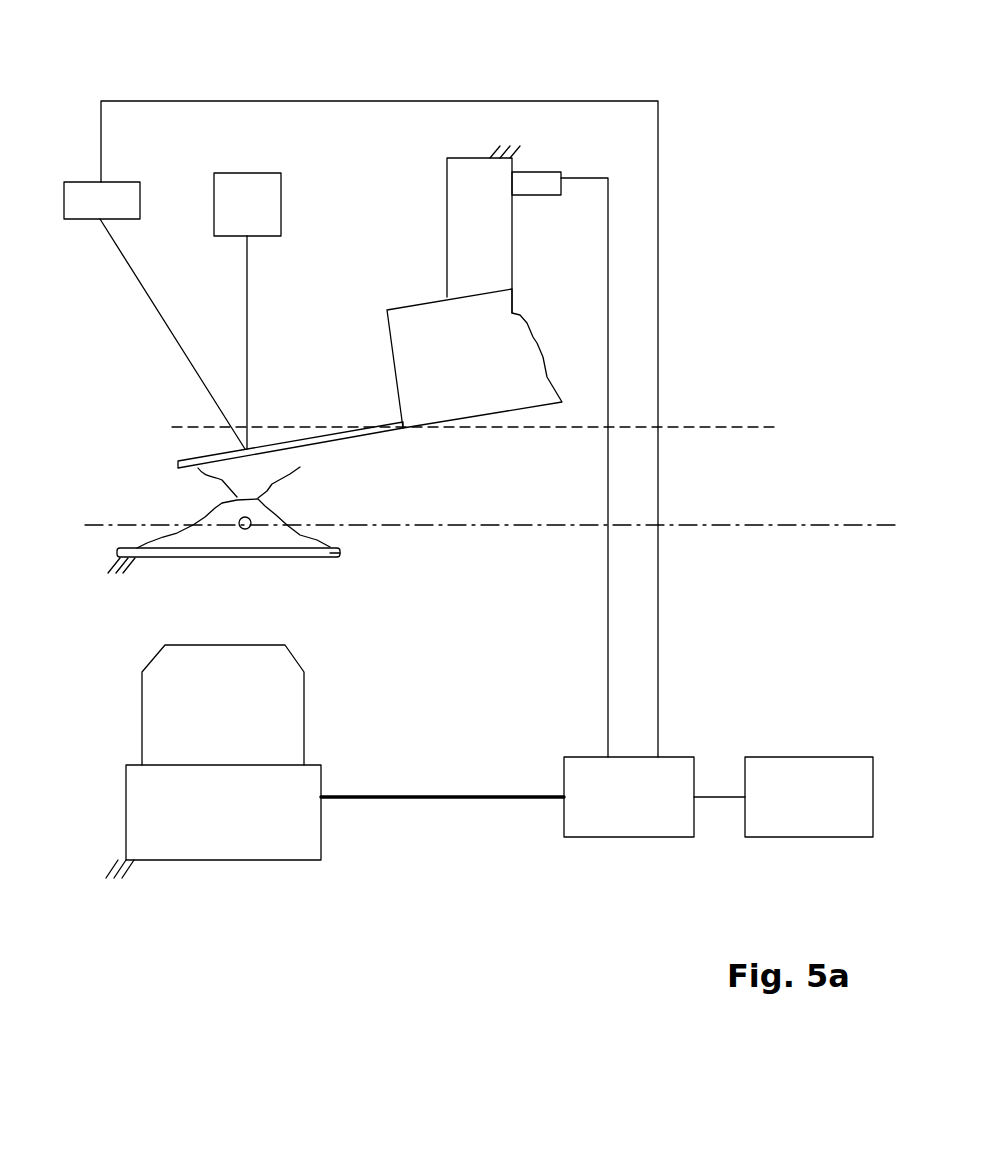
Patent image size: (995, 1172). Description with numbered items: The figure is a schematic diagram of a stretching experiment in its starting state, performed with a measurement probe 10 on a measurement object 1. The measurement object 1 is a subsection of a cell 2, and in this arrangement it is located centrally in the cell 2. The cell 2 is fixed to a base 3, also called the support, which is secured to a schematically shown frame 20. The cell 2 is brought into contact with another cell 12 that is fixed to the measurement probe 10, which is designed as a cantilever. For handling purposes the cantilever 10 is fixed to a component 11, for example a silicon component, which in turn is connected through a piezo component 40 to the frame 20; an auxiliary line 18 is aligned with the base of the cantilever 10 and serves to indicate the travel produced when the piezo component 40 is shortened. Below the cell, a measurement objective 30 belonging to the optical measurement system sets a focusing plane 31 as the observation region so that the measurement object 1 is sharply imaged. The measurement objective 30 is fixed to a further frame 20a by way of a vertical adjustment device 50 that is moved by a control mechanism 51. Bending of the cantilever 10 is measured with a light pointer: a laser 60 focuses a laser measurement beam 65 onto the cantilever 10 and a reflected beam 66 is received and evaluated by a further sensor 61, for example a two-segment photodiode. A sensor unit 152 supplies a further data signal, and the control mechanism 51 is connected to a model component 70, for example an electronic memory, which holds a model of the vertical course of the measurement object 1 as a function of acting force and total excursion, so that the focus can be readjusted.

The measurement object 1 is at (242, 530).
The cell 2 is at (278, 540).
The base 3 is at (343, 552).
The measurement probe 10 is at (307, 440).
The component 11 is at (530, 320).
The other cell 12 is at (280, 476).
The auxiliary line 18 is at (717, 425).
The frame 20 is at (500, 152).
The further frame 20a is at (137, 863).
The measurement objective 30 is at (287, 708).
The focusing plane 31 is at (757, 530).
The piezo component 40 is at (493, 252).
The vertical adjustment device 50 is at (305, 842).
The control mechanism 51 is at (667, 777).
The laser 60 is at (257, 203).
The further sensor 61 is at (80, 197).
The laser measurement beam 65 is at (247, 283).
The reflected beam 66 is at (138, 283).
The model component 70 is at (827, 775).
The sensor unit 152 is at (555, 168).